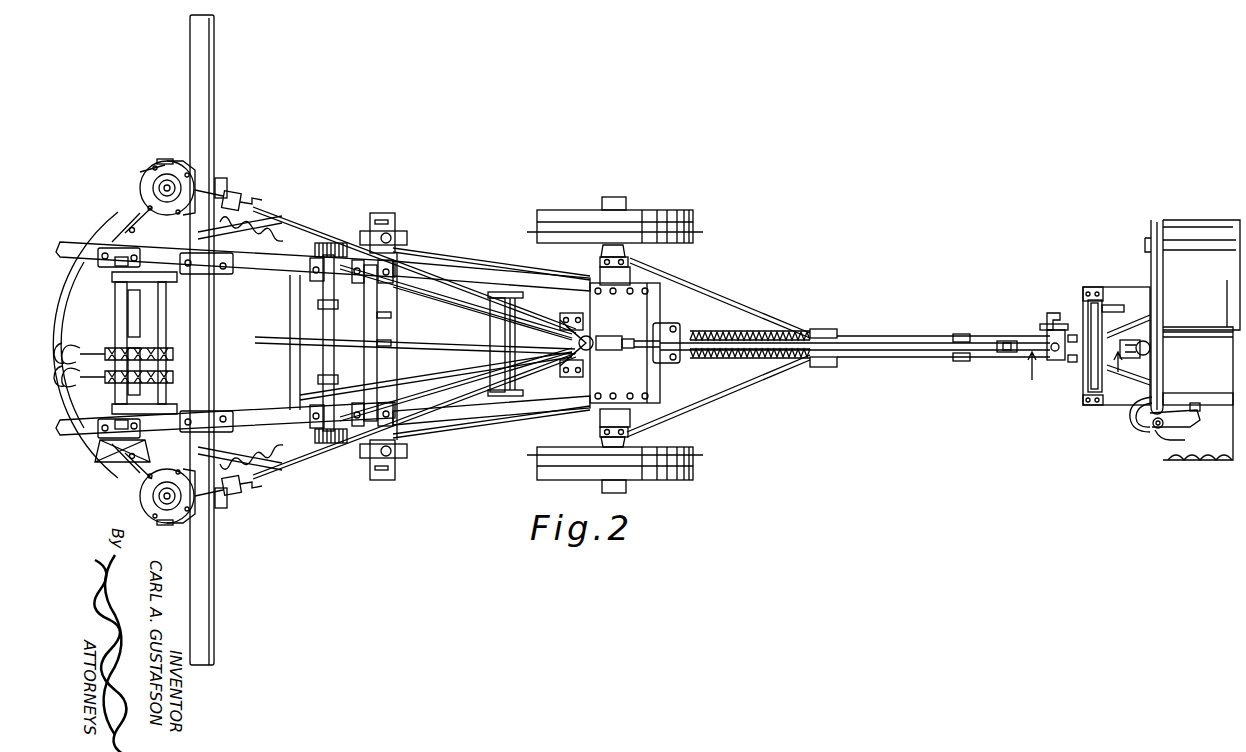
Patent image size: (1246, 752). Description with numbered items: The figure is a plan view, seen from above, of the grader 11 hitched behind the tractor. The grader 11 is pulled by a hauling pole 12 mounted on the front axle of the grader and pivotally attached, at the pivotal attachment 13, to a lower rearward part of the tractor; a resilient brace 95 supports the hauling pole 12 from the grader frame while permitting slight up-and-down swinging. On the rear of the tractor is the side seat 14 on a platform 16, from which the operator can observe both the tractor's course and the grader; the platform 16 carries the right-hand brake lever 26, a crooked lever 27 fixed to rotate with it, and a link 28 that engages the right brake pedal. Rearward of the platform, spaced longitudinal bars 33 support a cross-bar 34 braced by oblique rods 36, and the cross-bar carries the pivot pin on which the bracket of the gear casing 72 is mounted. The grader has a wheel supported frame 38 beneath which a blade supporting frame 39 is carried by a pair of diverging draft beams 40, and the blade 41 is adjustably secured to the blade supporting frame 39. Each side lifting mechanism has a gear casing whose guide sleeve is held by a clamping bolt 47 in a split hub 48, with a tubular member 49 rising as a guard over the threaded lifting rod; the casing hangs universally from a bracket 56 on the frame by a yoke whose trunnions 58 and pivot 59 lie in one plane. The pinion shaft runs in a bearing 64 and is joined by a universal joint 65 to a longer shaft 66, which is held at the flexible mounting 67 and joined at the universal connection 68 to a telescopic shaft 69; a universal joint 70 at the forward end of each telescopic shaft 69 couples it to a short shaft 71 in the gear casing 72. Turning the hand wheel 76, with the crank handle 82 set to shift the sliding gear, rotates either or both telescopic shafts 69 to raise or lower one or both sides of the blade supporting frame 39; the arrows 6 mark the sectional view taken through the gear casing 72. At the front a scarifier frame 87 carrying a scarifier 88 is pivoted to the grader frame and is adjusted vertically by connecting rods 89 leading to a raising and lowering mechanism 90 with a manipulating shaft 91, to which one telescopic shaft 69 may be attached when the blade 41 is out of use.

The direction arrows 6 is at (1073, 376).
The grader 11 is at (565, 193).
The hauling pole 12 is at (922, 336).
The pivotal attachment 13 is at (1150, 348).
The side seat 14 is at (1200, 230).
The platform 16 is at (1165, 392).
The brake lever 26 is at (1177, 430).
The crooked lever 27 is at (1143, 432).
The link 28 is at (1217, 395).
The longitudinal bars 33 is at (1122, 288).
The cross-bar 34 is at (1084, 292).
The oblique rods 36 is at (1128, 323).
The wheel supported frame 38 is at (493, 277).
The blade supporting frame 39 is at (112, 233).
The draft beams 40 is at (287, 255).
The blade 41 is at (214, 633).
The clamping bolt 47 is at (163, 183).
The split hub 48 is at (153, 187).
The tubular member 49 is at (172, 180).
The bracket 56 is at (227, 274).
The trunnions 58 is at (165, 160).
The pivot 59 is at (224, 187).
The bearing 64 is at (219, 185).
The universal joint 65 is at (243, 203).
The longer shaft 66 is at (320, 237).
The flexible mounting 67 is at (578, 322).
The universal connection 68 is at (605, 338).
The telescopic shaft 69 is at (872, 335).
The universal joint 70 is at (1008, 342).
The short shaft 71 is at (1045, 330).
The gear casing 72 is at (1060, 360).
The hand wheel 76 is at (1090, 390).
The crank handle 82 is at (1052, 322).
The scarifier frame 87 is at (393, 215).
The scarifier 88 is at (390, 323).
The connecting rods 89 is at (393, 237).
The raising and lowering mechanism 90 is at (318, 380).
The manipulating shaft 91 is at (432, 385).
The resilient brace 95 is at (740, 360).